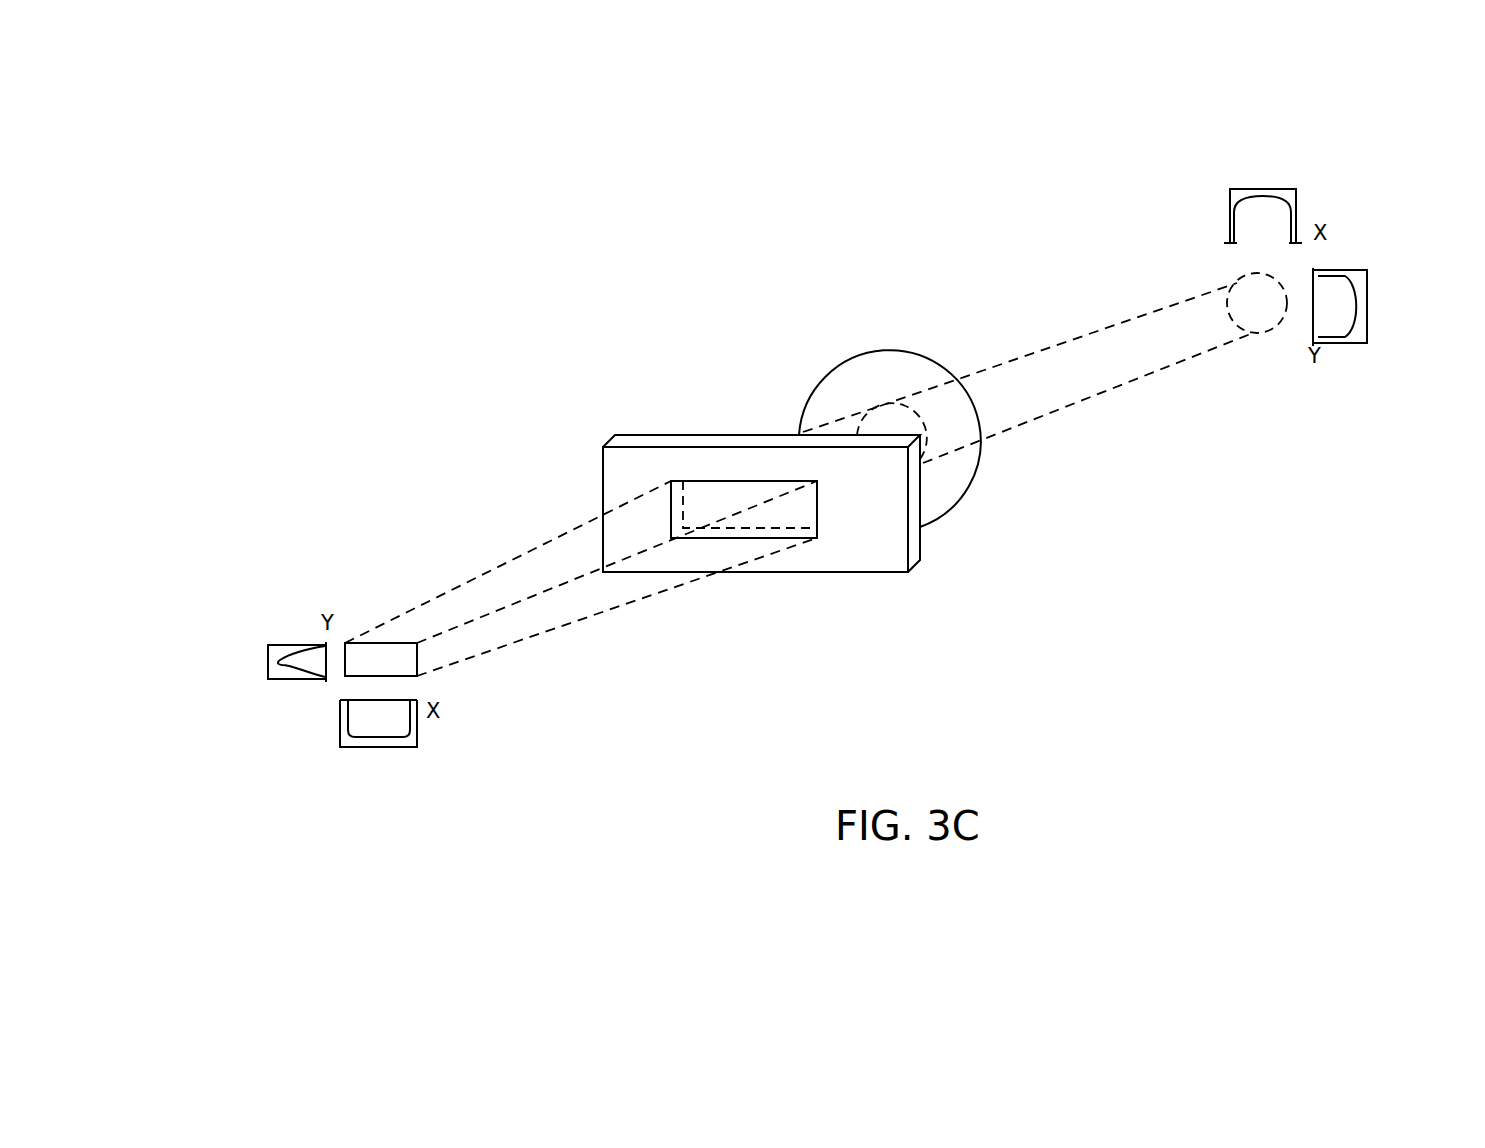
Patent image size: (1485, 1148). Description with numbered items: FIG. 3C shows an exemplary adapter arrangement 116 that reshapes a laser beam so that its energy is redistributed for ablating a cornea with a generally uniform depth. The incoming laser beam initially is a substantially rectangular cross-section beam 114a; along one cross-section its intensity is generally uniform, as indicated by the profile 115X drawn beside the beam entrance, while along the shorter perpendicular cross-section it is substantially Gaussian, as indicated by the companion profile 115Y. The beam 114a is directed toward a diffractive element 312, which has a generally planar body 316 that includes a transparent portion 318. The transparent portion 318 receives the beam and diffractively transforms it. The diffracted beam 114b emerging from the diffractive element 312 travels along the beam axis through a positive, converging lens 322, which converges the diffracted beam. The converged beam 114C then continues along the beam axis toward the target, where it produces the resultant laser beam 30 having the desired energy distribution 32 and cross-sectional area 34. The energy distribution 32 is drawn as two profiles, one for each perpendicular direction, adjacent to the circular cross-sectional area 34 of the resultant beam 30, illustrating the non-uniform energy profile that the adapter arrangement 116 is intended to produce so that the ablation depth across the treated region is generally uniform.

The adapter arrangement 116 is at (715, 280).
The diffractive element 312 is at (893, 573).
The planar body 316 is at (845, 562).
The transparent portion 318 is at (807, 507).
The converging lens 322 is at (886, 350).
The rectangular cross-section beam 114a is at (512, 642).
The diffracted beam 114b is at (826, 421).
The converged beam 114C is at (1103, 395).
The resultant laser beam 30 is at (1237, 282).
The energy distribution 32 is at (1260, 195).
The cross-sectional area 34 is at (1252, 334).
The input beam Y profile 115Y is at (288, 652).
The uniform energy distribution profile 115X is at (388, 743).